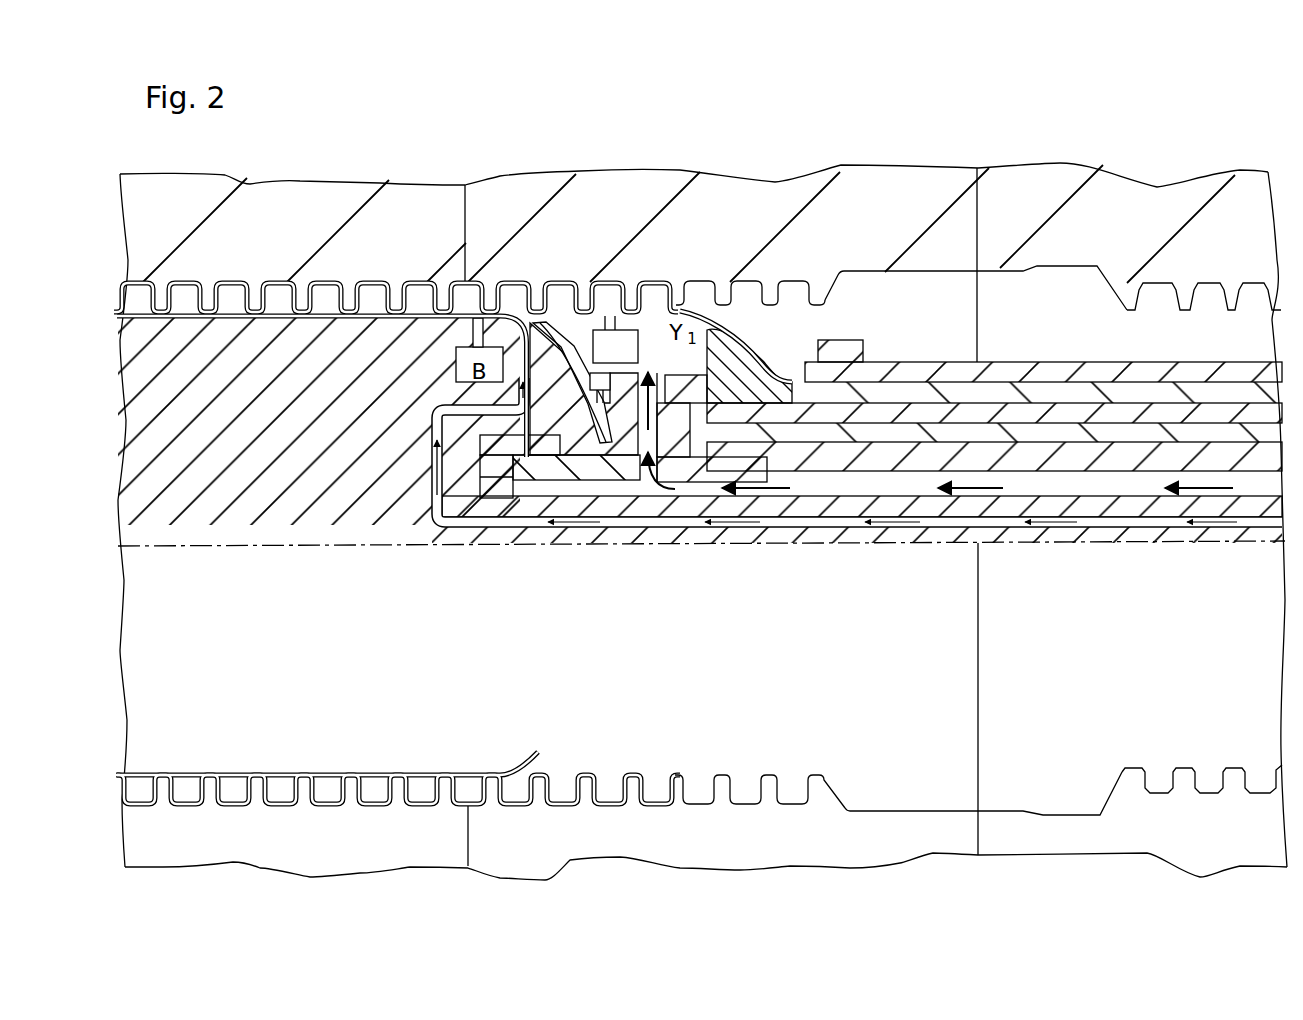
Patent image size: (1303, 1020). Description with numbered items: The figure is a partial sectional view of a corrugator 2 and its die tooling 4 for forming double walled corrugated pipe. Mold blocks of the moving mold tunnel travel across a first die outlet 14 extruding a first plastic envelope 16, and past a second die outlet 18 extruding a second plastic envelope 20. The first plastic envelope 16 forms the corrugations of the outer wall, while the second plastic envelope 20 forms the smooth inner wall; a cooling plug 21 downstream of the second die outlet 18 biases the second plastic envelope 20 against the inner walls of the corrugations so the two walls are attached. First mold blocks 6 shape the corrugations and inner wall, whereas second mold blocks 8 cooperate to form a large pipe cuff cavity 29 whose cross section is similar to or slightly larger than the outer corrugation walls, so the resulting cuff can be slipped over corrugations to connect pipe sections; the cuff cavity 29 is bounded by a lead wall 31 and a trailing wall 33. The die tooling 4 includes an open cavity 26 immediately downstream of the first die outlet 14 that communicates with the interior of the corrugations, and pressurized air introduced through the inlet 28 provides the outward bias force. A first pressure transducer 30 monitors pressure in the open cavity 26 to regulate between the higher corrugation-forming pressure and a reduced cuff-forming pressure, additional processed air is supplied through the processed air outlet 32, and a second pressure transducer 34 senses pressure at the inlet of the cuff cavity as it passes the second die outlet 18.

The exhaust gas treatment arrangement 2 is at (1012, 110).
The die tooling 4 is at (330, 400).
The first mold blocks 6 is at (395, 213).
The second mold blocks 8 is at (905, 185).
The first die outlet 14 is at (725, 312).
The first plastic envelope 16 is at (710, 290).
The second die outlet 18 is at (533, 320).
The second plastic envelope 20 is at (520, 311).
The cooling plug 21 is at (263, 452).
The open cavity 26 is at (568, 338).
The inlet 28 is at (660, 378).
The pipe cuff cavity 29 is at (982, 277).
The first pressure transducer 30 is at (627, 340).
The lead wall 31 is at (840, 289).
The processed air outlet 32 is at (530, 352).
The trailing wall 33 is at (1122, 305).
The second pressure transducer 34 is at (430, 412).